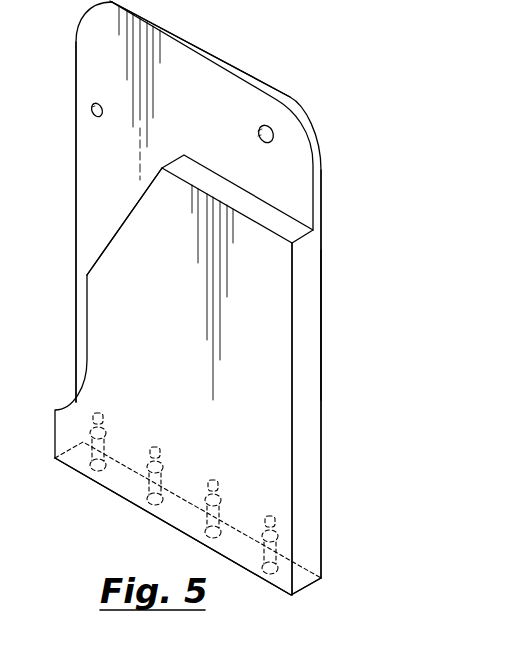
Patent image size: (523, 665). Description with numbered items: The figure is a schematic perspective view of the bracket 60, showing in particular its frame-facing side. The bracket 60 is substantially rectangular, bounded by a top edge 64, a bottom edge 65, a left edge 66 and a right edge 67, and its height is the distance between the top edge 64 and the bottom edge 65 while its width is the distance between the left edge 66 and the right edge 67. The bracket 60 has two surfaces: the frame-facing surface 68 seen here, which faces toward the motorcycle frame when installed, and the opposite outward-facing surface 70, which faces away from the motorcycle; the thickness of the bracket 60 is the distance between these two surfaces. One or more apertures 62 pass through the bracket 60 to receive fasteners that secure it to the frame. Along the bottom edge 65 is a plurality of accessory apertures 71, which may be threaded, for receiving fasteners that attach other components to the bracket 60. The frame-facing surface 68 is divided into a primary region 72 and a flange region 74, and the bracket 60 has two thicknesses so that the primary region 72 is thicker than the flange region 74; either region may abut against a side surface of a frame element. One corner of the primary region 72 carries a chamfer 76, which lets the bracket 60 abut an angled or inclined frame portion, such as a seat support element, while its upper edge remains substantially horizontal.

The bracket 60 is at (350, 252).
The apertures 62 is at (277, 128).
The top edge 64 is at (205, 47).
The bottom edge 65 is at (245, 573).
The left edge 66 is at (76, 176).
The right edge 67 is at (321, 392).
The frame-facing surface 68 is at (272, 450).
The outward-facing surface 70 is at (321, 322).
The accessory apertures 71 is at (93, 465).
The primary region 72 is at (110, 322).
The flange region 74 is at (102, 62).
The chamfer 76 is at (119, 229).